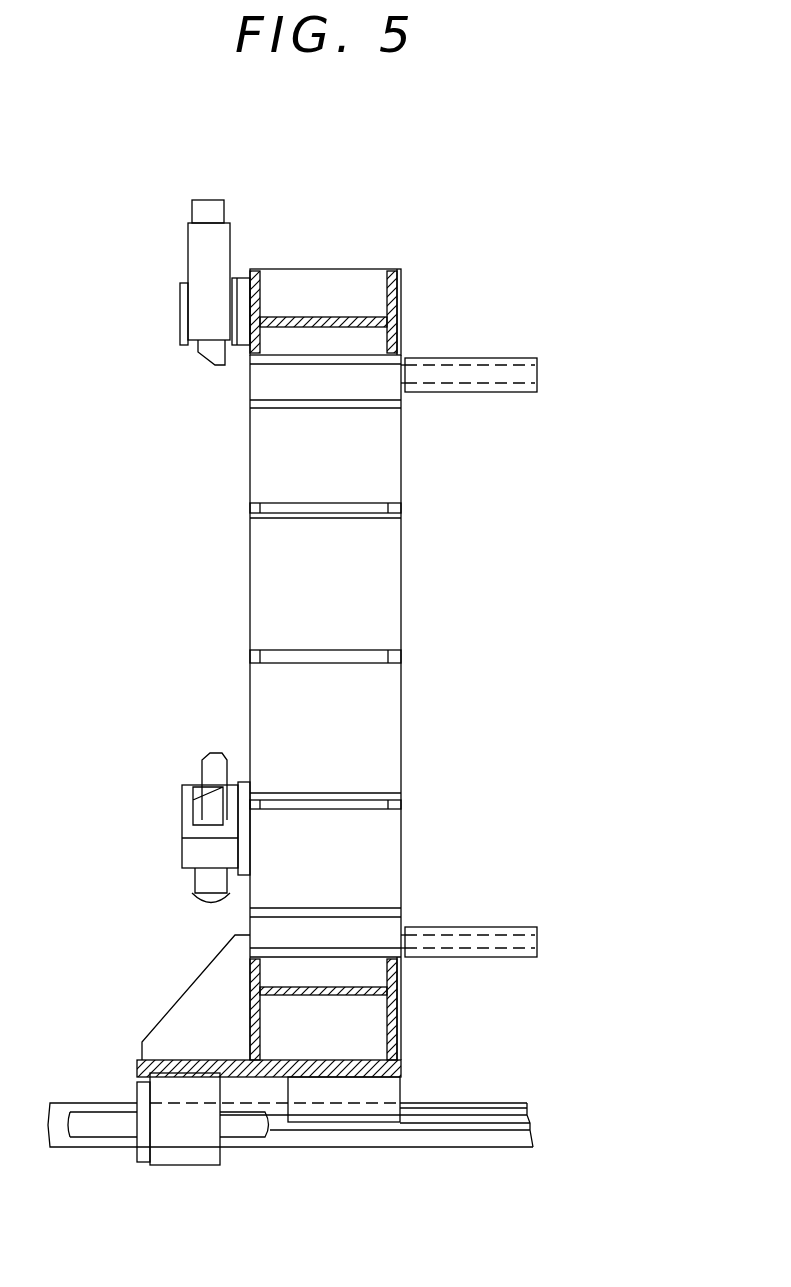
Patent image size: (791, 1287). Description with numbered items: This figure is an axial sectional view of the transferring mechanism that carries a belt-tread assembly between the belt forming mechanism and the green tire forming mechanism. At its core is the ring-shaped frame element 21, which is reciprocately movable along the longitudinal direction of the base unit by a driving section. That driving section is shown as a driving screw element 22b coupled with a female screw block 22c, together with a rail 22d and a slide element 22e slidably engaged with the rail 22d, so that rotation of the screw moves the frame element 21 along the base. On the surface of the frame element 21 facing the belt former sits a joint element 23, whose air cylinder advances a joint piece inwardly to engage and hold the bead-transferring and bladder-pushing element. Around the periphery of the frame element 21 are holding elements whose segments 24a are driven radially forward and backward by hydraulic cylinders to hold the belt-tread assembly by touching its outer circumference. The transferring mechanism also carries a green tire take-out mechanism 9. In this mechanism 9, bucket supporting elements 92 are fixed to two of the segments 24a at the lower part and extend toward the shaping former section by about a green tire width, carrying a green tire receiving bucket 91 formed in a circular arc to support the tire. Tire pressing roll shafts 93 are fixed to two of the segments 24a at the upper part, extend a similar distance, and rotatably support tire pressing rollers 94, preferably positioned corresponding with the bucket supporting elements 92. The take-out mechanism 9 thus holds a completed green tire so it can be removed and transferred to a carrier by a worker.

The joint element 23 is at (210, 192).
The ring-shaped frame element 21 is at (401, 298).
The segment 24a is at (260, 580).
The green tire take-out mechanism 9 is at (650, 407).
The tire pressing roll shaft 93 is at (503, 377).
The tire pressing roller 94 is at (468, 392).
The green tire receiving bucket 91 is at (462, 927).
The bucket supporting element 92 is at (515, 937).
The rail 22d is at (518, 1103).
The driving screw element 22b is at (92, 1137).
The female screw block 22c is at (187, 1167).
The slide element 22e is at (353, 1115).